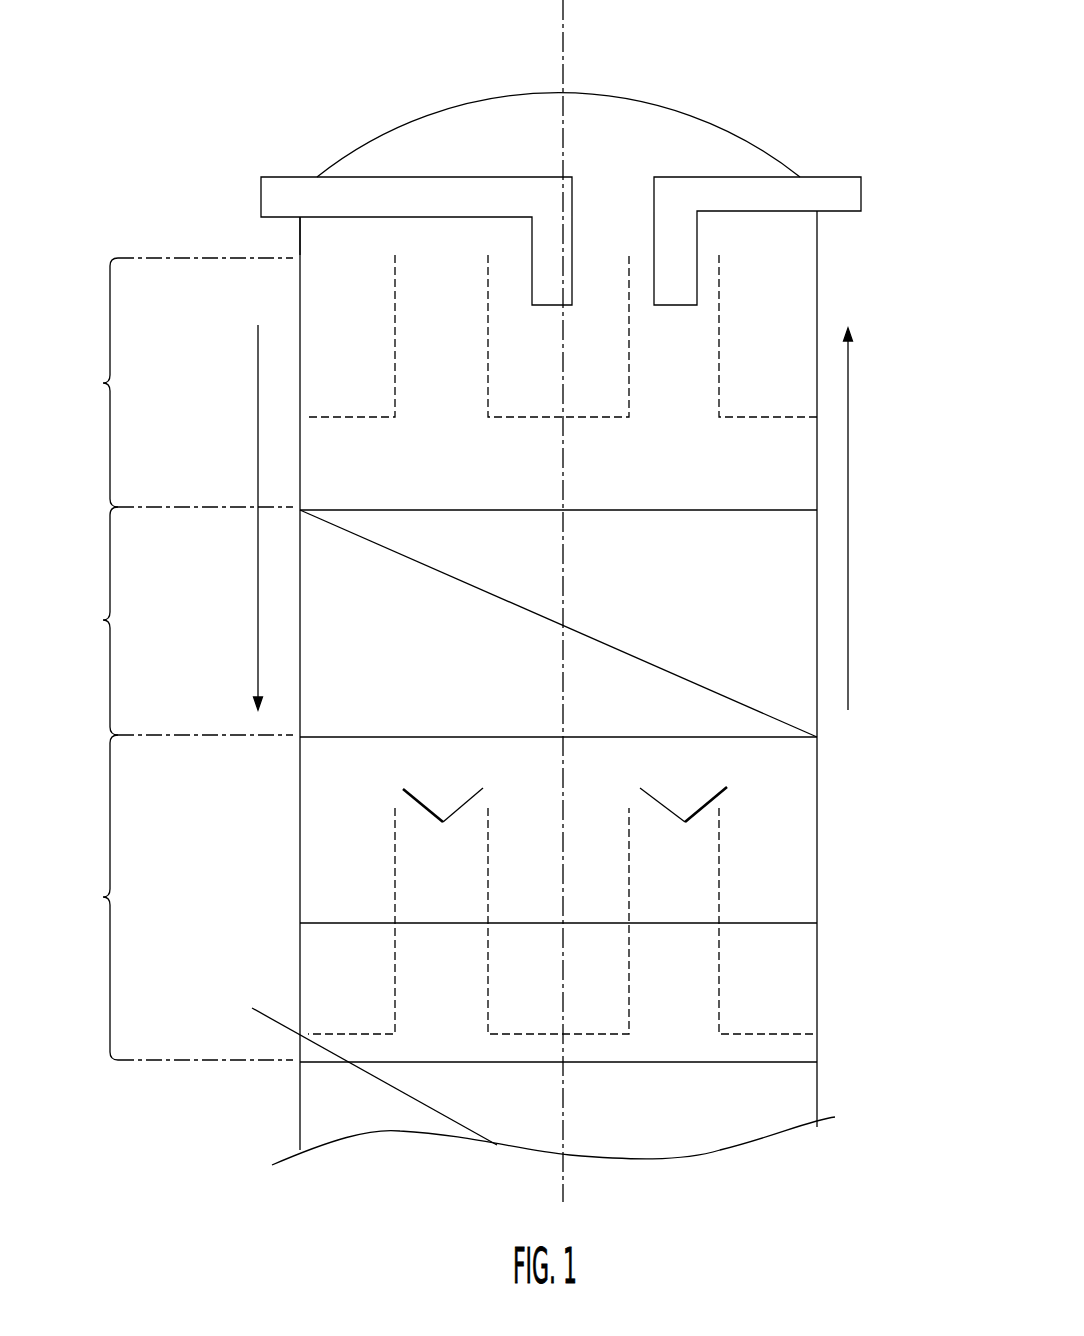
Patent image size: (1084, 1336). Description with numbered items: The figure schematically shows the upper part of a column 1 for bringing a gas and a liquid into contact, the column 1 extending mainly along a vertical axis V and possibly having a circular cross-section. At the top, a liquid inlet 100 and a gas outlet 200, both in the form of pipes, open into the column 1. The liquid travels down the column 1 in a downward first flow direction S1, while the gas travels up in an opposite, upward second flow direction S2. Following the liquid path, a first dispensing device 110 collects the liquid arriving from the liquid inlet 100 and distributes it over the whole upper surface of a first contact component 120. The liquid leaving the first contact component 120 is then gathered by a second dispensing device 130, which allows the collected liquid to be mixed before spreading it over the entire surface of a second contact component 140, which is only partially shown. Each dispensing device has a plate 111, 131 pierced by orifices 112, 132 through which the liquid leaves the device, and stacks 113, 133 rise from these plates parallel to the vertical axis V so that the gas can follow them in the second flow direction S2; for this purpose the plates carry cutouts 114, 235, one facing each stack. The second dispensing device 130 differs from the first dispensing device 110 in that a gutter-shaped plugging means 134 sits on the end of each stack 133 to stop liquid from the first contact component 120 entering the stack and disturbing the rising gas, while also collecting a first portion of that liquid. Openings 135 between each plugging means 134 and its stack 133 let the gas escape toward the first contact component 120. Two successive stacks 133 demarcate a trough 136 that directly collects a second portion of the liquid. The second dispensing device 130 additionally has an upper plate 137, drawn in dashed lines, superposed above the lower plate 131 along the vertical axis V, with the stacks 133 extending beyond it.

The column 1 is at (202, 590).
The liquid inlet 100 is at (278, 177).
The gas outlet 200 is at (832, 177).
The first dispensing device 110 is at (177, 382).
The first contact component 120 is at (177, 621).
The second dispensing device 130 is at (177, 897).
The second contact component 140 is at (300, 1100).
The plate 111 is at (328, 415).
The orifices 112 is at (505, 382).
The stacks 113 is at (408, 324).
The cutouts 114 is at (459, 425).
The plate 131 is at (325, 1034).
The orifices 132 is at (508, 990).
The stacks 133 is at (410, 895).
The plugging means 134 is at (405, 798).
The openings 135 is at (373, 807).
The trough 136 is at (526, 860).
The upper plate 137 is at (688, 925).
The cutouts 235 is at (437, 1060).
The first flow direction S1 is at (258, 448).
The second flow direction S2 is at (848, 573).
The vertical axis V is at (562, 1172).